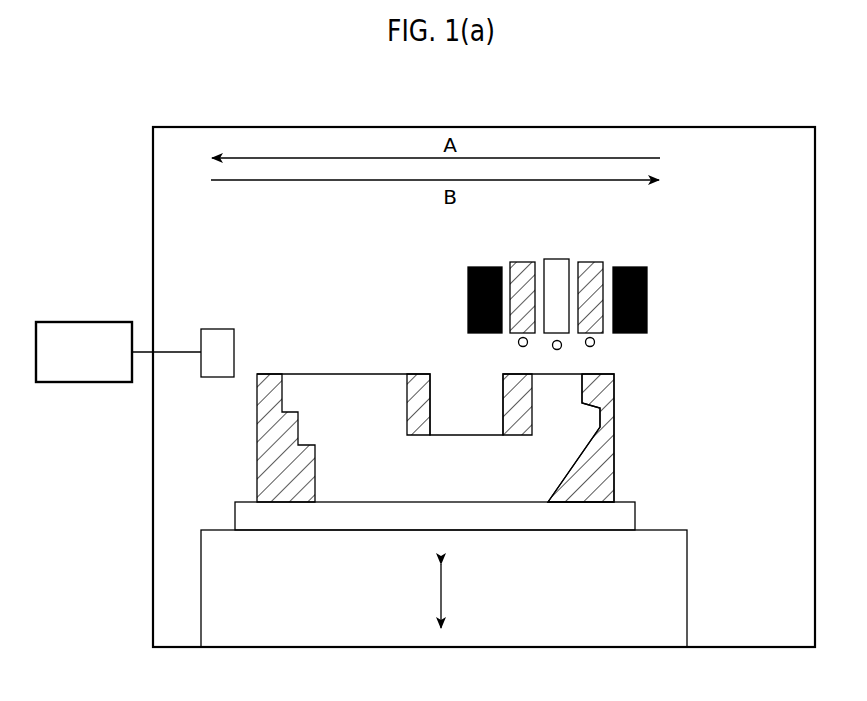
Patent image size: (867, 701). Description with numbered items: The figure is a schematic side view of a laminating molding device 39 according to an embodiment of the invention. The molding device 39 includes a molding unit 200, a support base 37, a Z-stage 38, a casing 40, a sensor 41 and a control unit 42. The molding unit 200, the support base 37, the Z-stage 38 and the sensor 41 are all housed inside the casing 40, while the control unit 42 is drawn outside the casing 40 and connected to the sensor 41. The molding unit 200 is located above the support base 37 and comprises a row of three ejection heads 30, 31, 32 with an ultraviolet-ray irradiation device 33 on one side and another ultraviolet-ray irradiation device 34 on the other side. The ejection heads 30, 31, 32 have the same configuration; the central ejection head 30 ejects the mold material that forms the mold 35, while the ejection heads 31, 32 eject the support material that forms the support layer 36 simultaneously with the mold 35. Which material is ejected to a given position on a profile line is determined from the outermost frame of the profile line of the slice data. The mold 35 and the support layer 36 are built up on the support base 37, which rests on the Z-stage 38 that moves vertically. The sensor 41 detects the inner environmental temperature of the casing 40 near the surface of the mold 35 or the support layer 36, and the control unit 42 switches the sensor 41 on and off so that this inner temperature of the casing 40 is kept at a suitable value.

The molding unit 200 is at (692, 225).
The ejection head 30 is at (563, 258).
The ejection head 31 is at (528, 258).
The ejection head 32 is at (597, 258).
The ultraviolet-ray irradiation device 33 is at (462, 298).
The ultraviolet-ray irradiation device 34 is at (648, 295).
The mold 35 is at (471, 406).
The support layer 36 is at (617, 397).
The support base 37 is at (640, 522).
The Z-stage 38 is at (690, 577).
The molding device 39 is at (790, 113).
The casing 40 is at (153, 459).
The sensor 41 is at (223, 329).
The control unit 42 is at (95, 322).